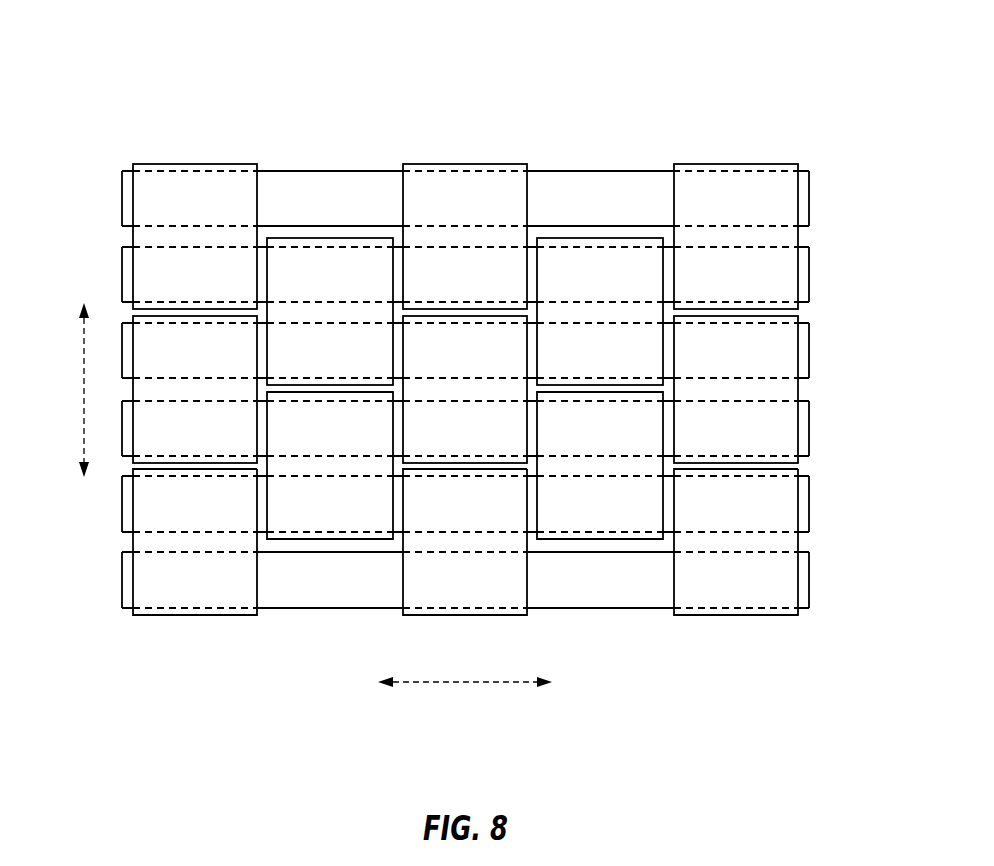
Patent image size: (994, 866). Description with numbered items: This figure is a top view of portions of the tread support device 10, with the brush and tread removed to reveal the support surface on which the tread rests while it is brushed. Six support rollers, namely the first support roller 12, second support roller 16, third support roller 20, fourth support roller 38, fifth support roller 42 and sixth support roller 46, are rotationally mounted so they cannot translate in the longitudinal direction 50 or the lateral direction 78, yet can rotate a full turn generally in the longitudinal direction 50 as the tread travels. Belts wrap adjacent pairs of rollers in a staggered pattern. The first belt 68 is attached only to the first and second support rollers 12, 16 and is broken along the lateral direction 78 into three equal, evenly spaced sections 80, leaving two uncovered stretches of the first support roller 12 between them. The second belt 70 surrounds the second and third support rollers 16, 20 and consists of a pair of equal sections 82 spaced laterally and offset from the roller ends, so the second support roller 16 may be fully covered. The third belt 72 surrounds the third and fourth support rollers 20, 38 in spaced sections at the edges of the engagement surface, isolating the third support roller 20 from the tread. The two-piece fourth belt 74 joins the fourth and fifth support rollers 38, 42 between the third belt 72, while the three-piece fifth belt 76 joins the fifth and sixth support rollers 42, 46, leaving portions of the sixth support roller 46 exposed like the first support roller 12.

The tread support device 10 is at (760, 62).
The first support roller 12 is at (593, 595).
The second support roller 16 is at (785, 518).
The third support roller 20 is at (785, 440).
The fourth support roller 38 is at (785, 362).
The fifth support roller 42 is at (785, 283).
The sixth support roller 46 is at (785, 205).
The longitudinal direction 50 is at (83, 390).
The first belt 68 is at (170, 595).
The second belt 70 is at (344, 515).
The third belt 72 is at (210, 365).
The fourth belt 74 is at (344, 286).
The fifth belt 76 is at (197, 182).
The lateral direction 78 is at (467, 683).
The sections 80 is at (220, 595).
The sections 82 is at (344, 441).